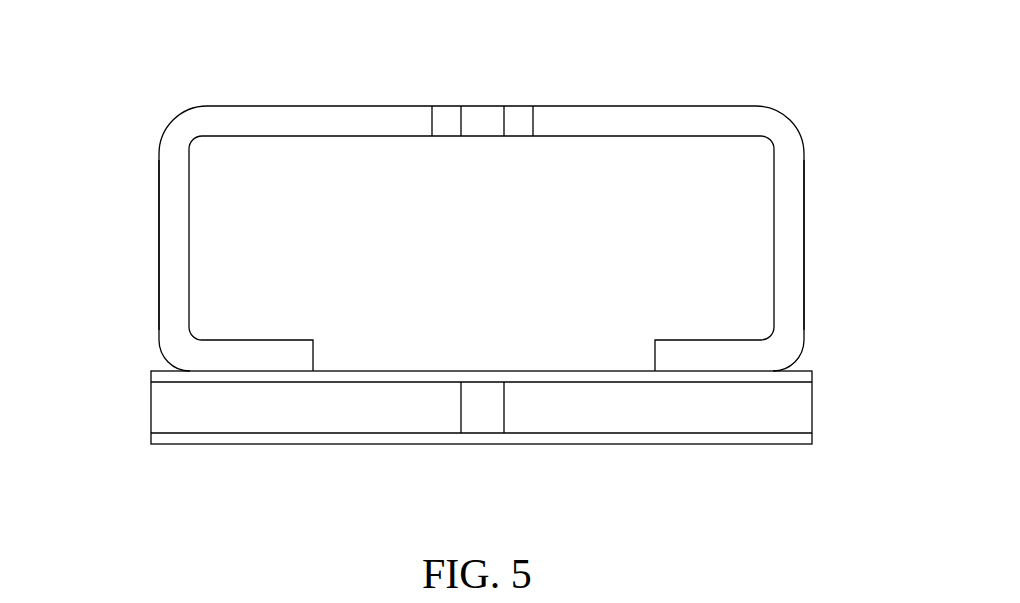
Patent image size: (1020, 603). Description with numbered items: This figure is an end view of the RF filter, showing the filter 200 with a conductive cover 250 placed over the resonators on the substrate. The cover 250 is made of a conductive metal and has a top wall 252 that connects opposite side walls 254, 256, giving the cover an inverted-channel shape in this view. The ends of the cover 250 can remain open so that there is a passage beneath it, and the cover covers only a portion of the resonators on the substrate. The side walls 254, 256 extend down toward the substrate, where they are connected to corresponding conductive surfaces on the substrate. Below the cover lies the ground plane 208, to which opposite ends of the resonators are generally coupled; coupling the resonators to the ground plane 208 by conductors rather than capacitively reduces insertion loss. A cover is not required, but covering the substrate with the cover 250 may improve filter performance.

The base / substrate 200 is at (132, 408).
The ground plane 208 is at (481, 445).
The cover 250 is at (713, 134).
The top wall 252 is at (295, 105).
The first side wall 254 is at (179, 241).
The second side wall 256 is at (783, 252).